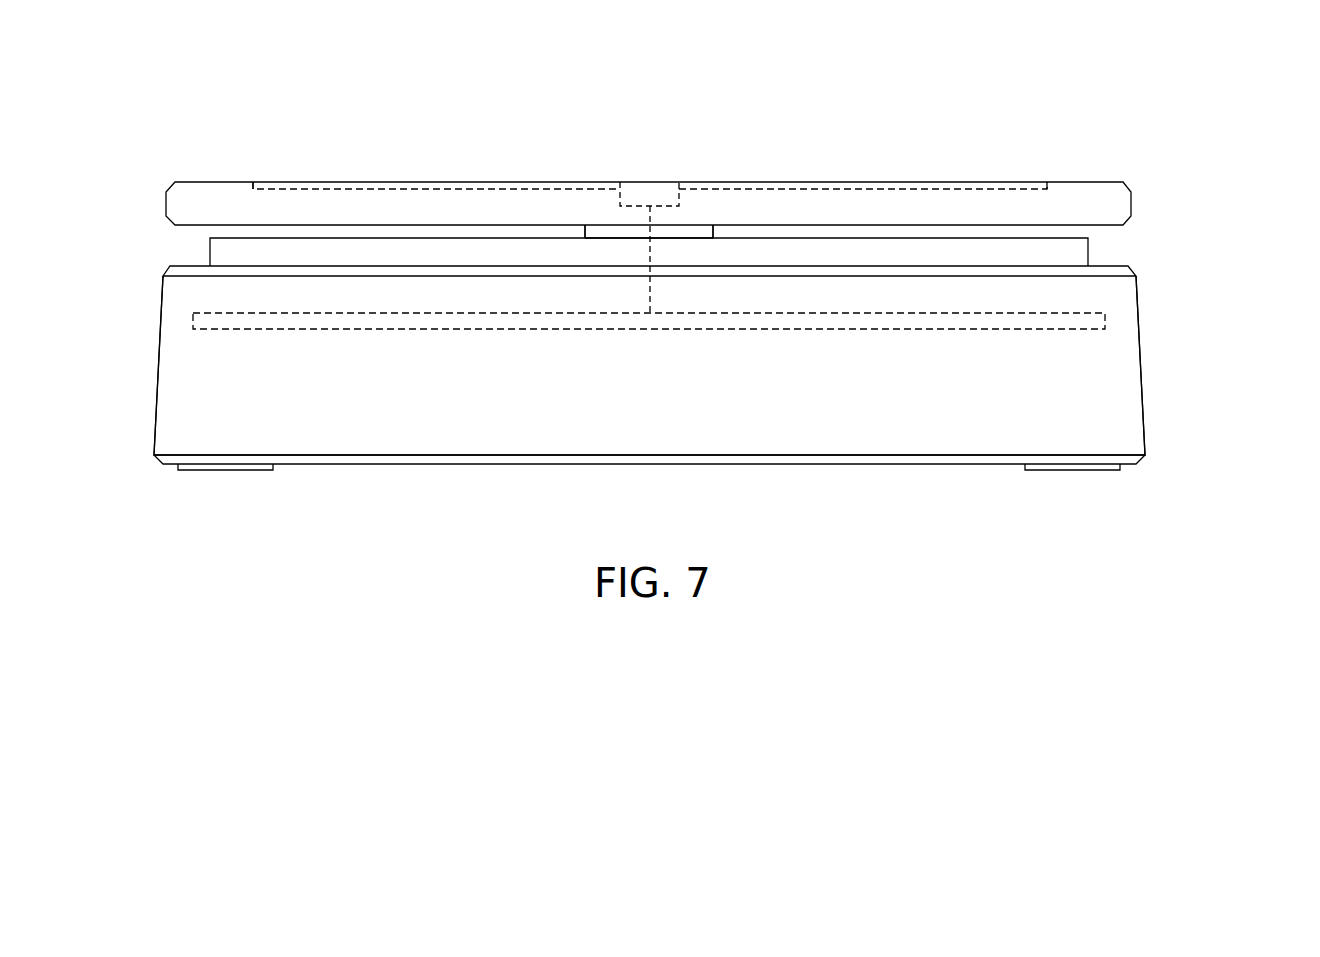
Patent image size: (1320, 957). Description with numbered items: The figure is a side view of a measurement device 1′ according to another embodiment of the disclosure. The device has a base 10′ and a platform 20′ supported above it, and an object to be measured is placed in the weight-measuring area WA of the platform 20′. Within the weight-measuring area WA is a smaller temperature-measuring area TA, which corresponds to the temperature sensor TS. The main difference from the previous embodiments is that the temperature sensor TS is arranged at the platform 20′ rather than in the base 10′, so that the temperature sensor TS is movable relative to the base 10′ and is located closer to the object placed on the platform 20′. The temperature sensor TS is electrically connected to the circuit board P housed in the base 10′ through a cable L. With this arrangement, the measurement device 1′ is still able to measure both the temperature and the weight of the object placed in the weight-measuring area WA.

The measurement device 1′ is at (184, 43).
The base 10′ is at (1157, 373).
The platform 20′ is at (1115, 172).
The weight-measuring area WA is at (303, 182).
The temperature-measuring area TA is at (619, 170).
The temperature sensor TS is at (658, 183).
The cable L is at (650, 255).
The circuit board P is at (1105, 320).